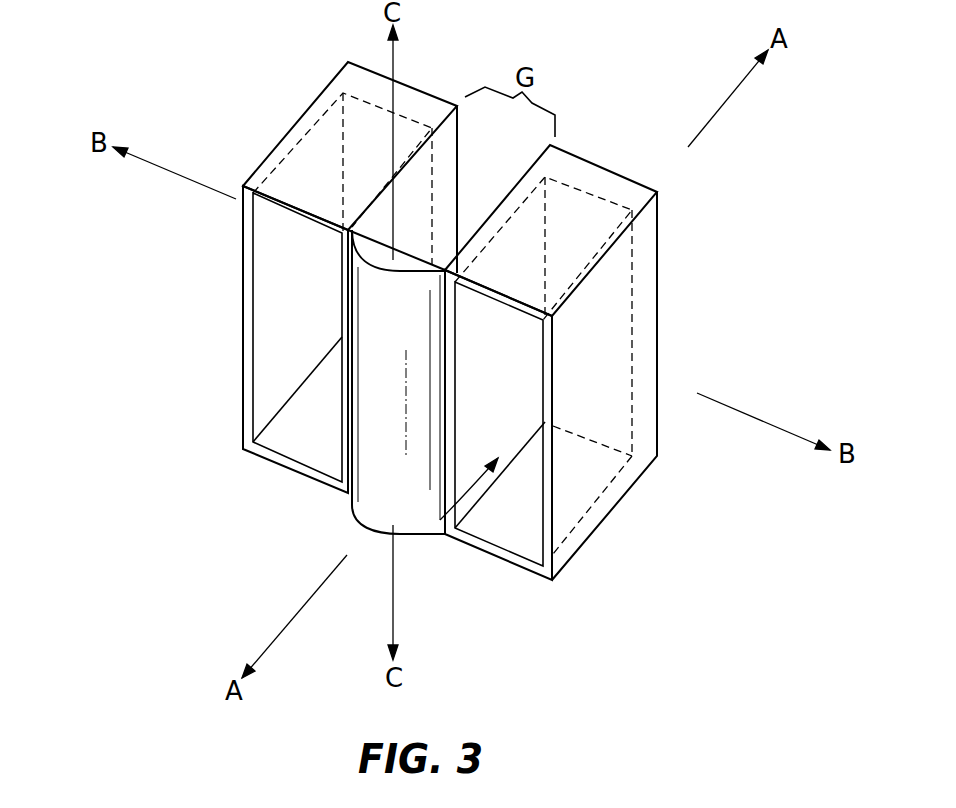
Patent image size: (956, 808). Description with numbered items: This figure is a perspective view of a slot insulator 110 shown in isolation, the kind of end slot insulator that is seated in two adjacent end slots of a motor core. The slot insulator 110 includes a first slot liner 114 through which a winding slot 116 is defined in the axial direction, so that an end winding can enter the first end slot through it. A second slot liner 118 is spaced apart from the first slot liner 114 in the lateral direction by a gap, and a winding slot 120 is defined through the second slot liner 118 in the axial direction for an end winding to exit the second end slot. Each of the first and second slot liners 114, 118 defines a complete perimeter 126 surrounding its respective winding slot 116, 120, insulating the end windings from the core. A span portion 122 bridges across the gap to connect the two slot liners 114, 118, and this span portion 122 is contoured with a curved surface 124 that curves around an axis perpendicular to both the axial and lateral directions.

The slot insulator 110 is at (147, 97).
The first slot liner 114 is at (302, 135).
The winding slot 116 is at (297, 333).
The second slot liner 118 is at (522, 508).
The winding slot 120 is at (446, 512).
The span portion 122 is at (393, 262).
The curved surface 124 is at (372, 434).
The complete perimeter 126 is at (250, 318).